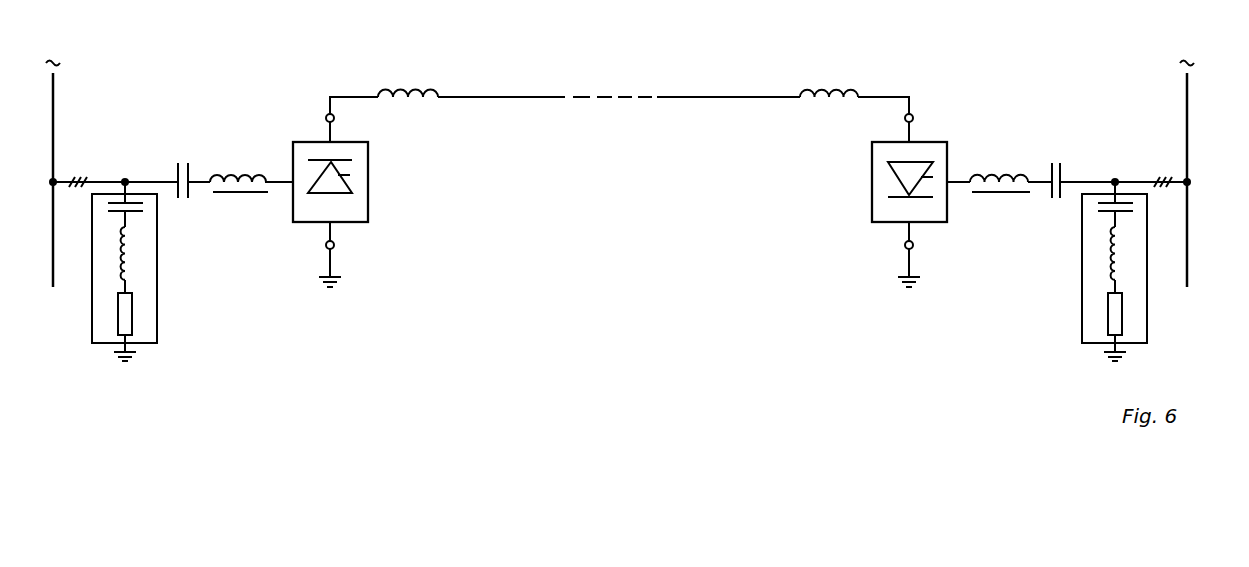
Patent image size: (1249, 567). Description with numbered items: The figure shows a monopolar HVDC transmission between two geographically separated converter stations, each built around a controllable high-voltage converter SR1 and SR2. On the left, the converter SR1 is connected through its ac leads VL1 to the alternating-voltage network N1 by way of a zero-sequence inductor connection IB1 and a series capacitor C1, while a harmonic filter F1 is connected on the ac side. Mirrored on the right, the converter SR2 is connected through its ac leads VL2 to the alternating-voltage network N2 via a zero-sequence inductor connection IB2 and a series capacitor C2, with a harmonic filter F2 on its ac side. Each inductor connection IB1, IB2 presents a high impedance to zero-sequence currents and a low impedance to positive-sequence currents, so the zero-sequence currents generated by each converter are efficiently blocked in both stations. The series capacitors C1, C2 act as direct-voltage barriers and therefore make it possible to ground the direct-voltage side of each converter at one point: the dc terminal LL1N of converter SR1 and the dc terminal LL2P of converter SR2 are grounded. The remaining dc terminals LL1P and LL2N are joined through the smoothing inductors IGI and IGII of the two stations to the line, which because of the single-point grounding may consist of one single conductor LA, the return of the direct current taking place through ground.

The alternating-voltage network N1 is at (50, 245).
The alternating-voltage network N2 is at (1190, 245).
The series capacitor C1 is at (183, 160).
The series capacitor C2 is at (1055, 160).
The zero-sequence inductor connection IB1 is at (235, 175).
The zero-sequence inductor connection IB2 is at (1005, 177).
The harmonic filter F1 is at (158, 303).
The harmonic filter F2 is at (1078, 303).
The converter SR1 is at (339, 195).
The converter SR2 is at (899, 195).
The ac leads VL1 is at (282, 187).
The ac leads VL2 is at (958, 187).
The dc terminal LL1P is at (326, 115).
The dc terminal LL1N is at (326, 247).
The dc terminal LL2N is at (914, 115).
The dc terminal LL2P is at (914, 247).
The smoothing inductor IGI is at (405, 90).
The smoothing inductor IGII is at (828, 92).
The conductor LA is at (605, 93).